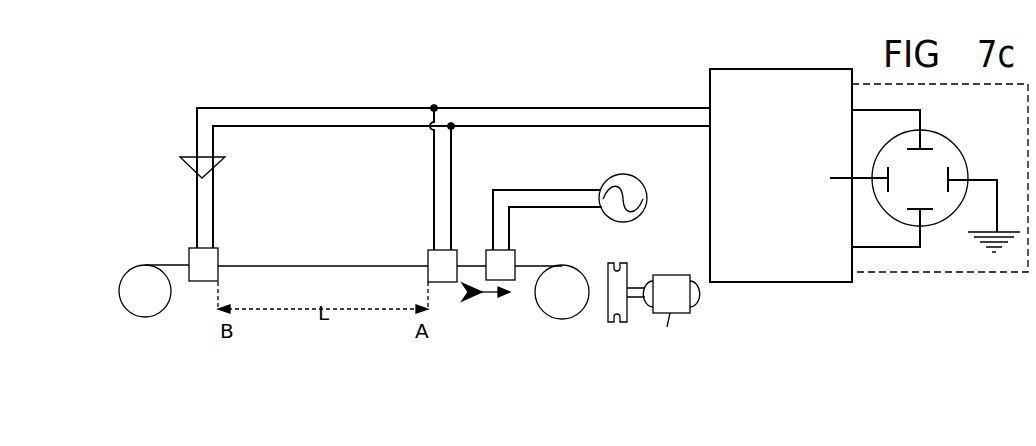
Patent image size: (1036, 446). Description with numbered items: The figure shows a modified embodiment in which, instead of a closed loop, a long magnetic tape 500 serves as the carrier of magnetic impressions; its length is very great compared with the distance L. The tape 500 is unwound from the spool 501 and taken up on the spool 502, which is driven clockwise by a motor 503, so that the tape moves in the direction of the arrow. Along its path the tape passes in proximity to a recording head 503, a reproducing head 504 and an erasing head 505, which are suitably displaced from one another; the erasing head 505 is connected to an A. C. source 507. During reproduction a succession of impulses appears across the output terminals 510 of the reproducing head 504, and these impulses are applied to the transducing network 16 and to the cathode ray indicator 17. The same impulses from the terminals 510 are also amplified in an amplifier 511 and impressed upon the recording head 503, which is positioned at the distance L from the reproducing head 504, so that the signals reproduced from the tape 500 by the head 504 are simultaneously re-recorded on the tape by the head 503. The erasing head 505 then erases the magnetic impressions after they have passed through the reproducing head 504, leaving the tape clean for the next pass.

The tape 500 is at (292, 266).
The spool 501 is at (118, 292).
The spool 502 is at (607, 315).
The recording head 503 is at (218, 255).
The reproducing head 504 is at (428, 262).
The erasing head 505 is at (515, 260).
The A. C. source 507 is at (640, 177).
The output terminals 510 is at (451, 190).
The amplifier 511 is at (220, 168).
The transducing network 16 is at (808, 282).
The cathode ray indicator 17 is at (928, 272).